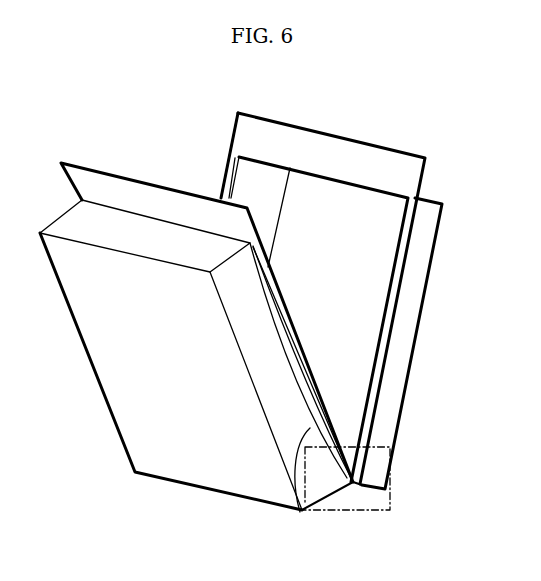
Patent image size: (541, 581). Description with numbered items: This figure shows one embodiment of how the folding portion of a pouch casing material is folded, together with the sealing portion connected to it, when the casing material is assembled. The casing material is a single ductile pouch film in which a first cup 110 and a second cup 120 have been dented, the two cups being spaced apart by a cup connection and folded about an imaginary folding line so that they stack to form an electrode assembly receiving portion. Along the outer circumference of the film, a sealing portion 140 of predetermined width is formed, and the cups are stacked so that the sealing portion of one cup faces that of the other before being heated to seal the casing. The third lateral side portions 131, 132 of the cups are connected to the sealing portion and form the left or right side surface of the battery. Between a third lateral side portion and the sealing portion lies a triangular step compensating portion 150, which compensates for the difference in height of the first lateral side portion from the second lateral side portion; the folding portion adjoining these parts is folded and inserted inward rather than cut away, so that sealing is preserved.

The first cup 110 is at (425, 173).
The second cup 120 is at (110, 350).
The third lateral side portion 131 is at (410, 302).
The third lateral side portion 132 is at (272, 400).
The sealing portion 140 is at (147, 203).
The step compensating portion 150 is at (300, 512).